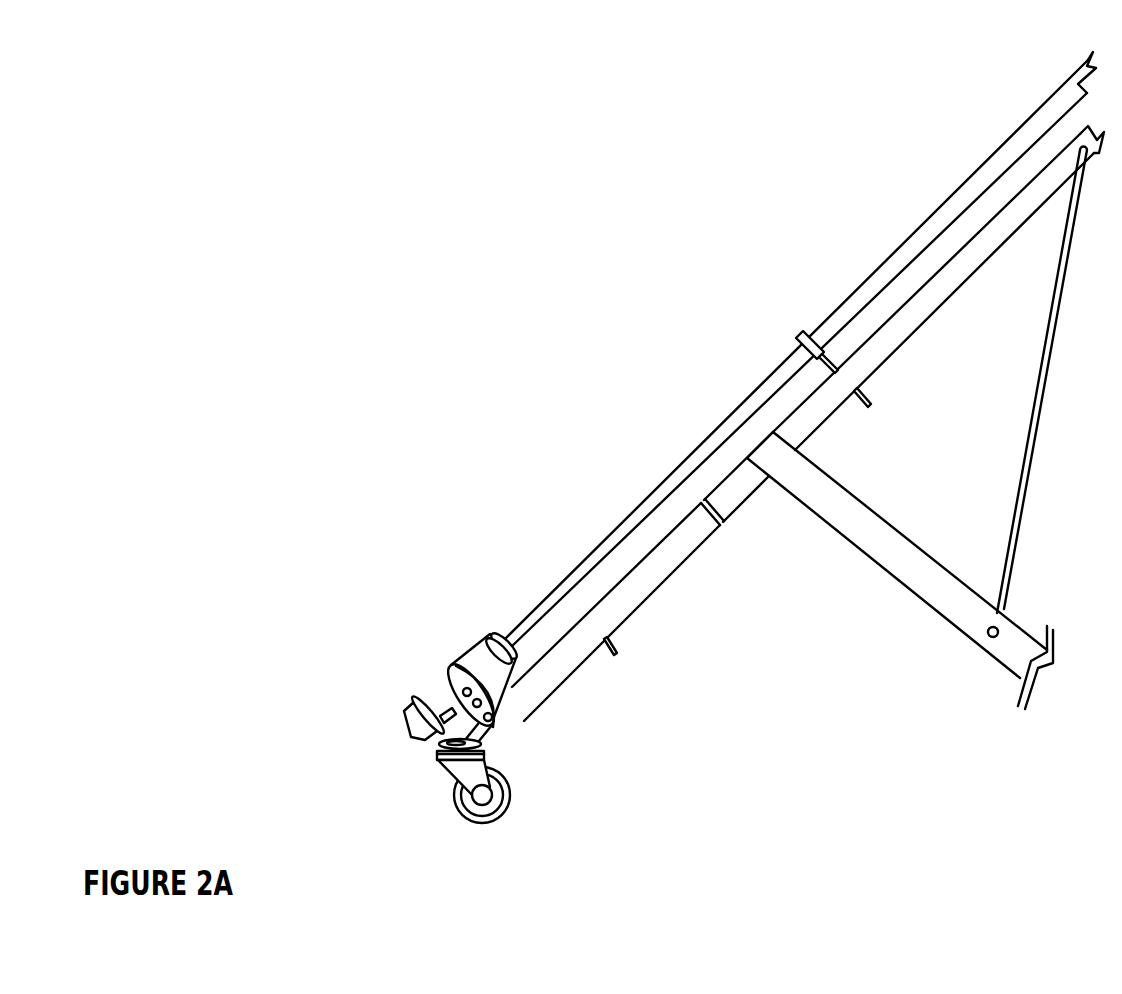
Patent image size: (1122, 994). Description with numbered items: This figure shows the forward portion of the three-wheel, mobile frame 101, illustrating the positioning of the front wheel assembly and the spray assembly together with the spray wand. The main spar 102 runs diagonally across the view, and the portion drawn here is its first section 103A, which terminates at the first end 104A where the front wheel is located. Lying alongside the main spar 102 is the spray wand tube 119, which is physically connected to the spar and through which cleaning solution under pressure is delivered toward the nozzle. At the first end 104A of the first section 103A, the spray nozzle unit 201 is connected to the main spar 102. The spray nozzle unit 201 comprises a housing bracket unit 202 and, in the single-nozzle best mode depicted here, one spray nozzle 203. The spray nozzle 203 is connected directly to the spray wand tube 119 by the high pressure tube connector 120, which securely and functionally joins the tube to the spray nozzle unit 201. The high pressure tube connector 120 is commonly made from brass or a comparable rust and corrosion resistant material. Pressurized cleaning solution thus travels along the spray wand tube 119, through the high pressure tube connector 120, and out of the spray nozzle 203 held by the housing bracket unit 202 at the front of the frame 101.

The three-wheel, mobile frame 101 is at (901, 142).
The spray wand tube 119 is at (847, 296).
The main spar 102 is at (750, 497).
The first section of the main spar 103A is at (650, 597).
The spray nozzle unit 201 is at (403, 599).
The high pressure tube connector 120 is at (502, 658).
The housing bracket unit 202 is at (482, 688).
The spray nozzle 203 is at (409, 720).
The first end of the first section 104A is at (405, 793).